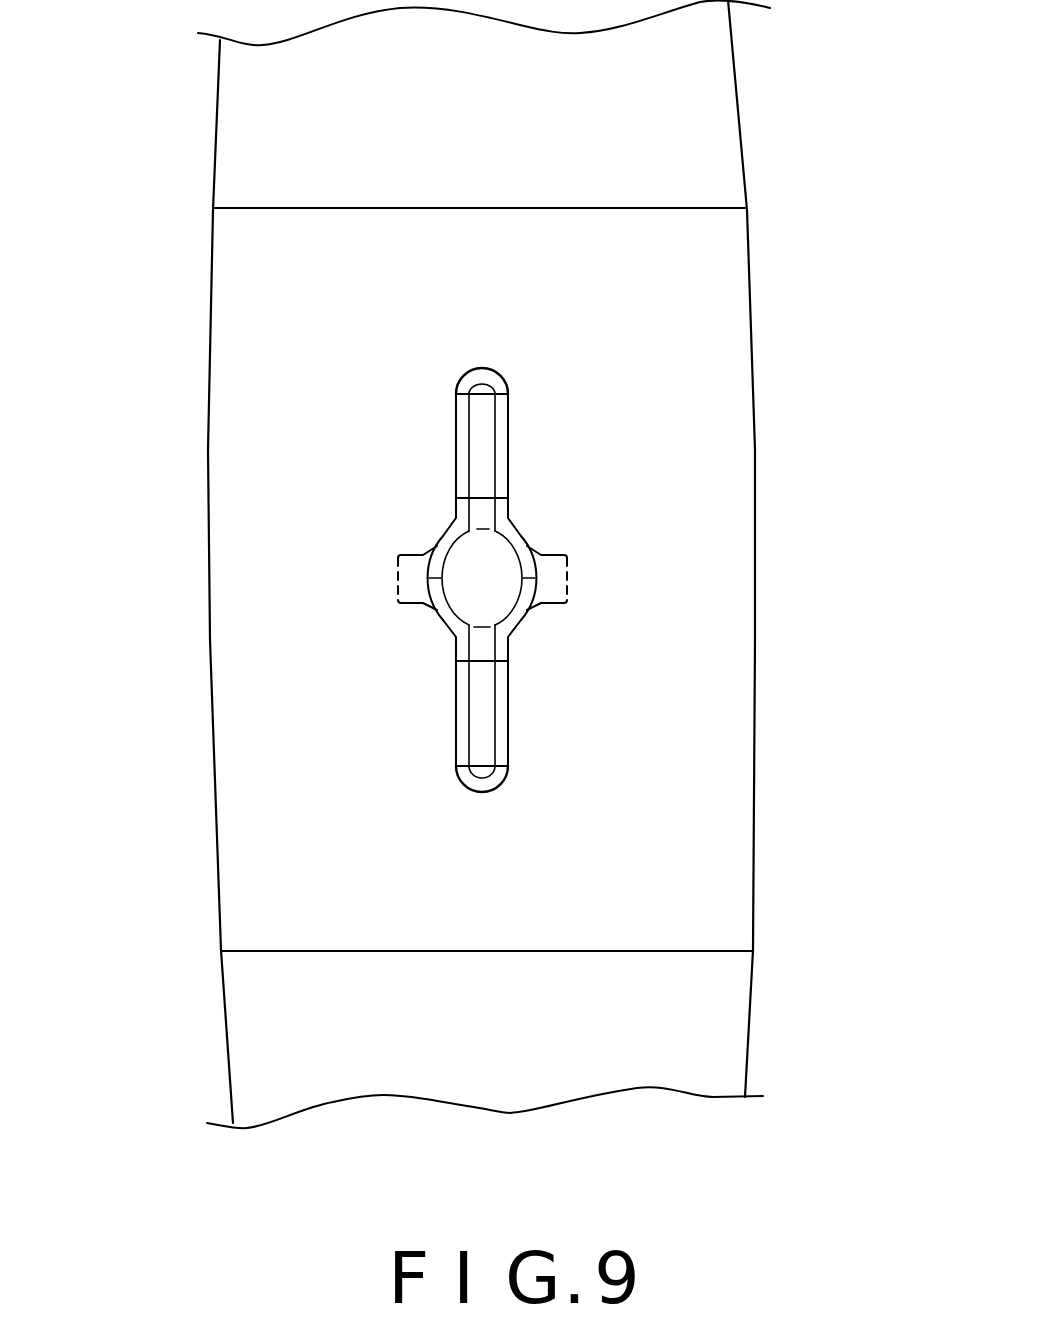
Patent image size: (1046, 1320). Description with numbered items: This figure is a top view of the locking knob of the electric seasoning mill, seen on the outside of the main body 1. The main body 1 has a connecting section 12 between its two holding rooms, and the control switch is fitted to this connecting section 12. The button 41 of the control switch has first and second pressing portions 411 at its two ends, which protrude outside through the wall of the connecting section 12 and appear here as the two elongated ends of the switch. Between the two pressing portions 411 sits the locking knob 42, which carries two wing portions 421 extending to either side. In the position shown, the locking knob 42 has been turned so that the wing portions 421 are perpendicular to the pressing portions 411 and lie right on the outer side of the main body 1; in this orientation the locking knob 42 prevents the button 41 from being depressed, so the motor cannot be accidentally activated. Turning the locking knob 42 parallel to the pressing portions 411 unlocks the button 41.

The main body 1 is at (750, 1007).
The connecting section 12 is at (725, 433).
The button 41 is at (500, 737).
The pressing portions 411 is at (487, 427).
The locking knob 42 is at (472, 587).
The wing portions 421 is at (553, 567).